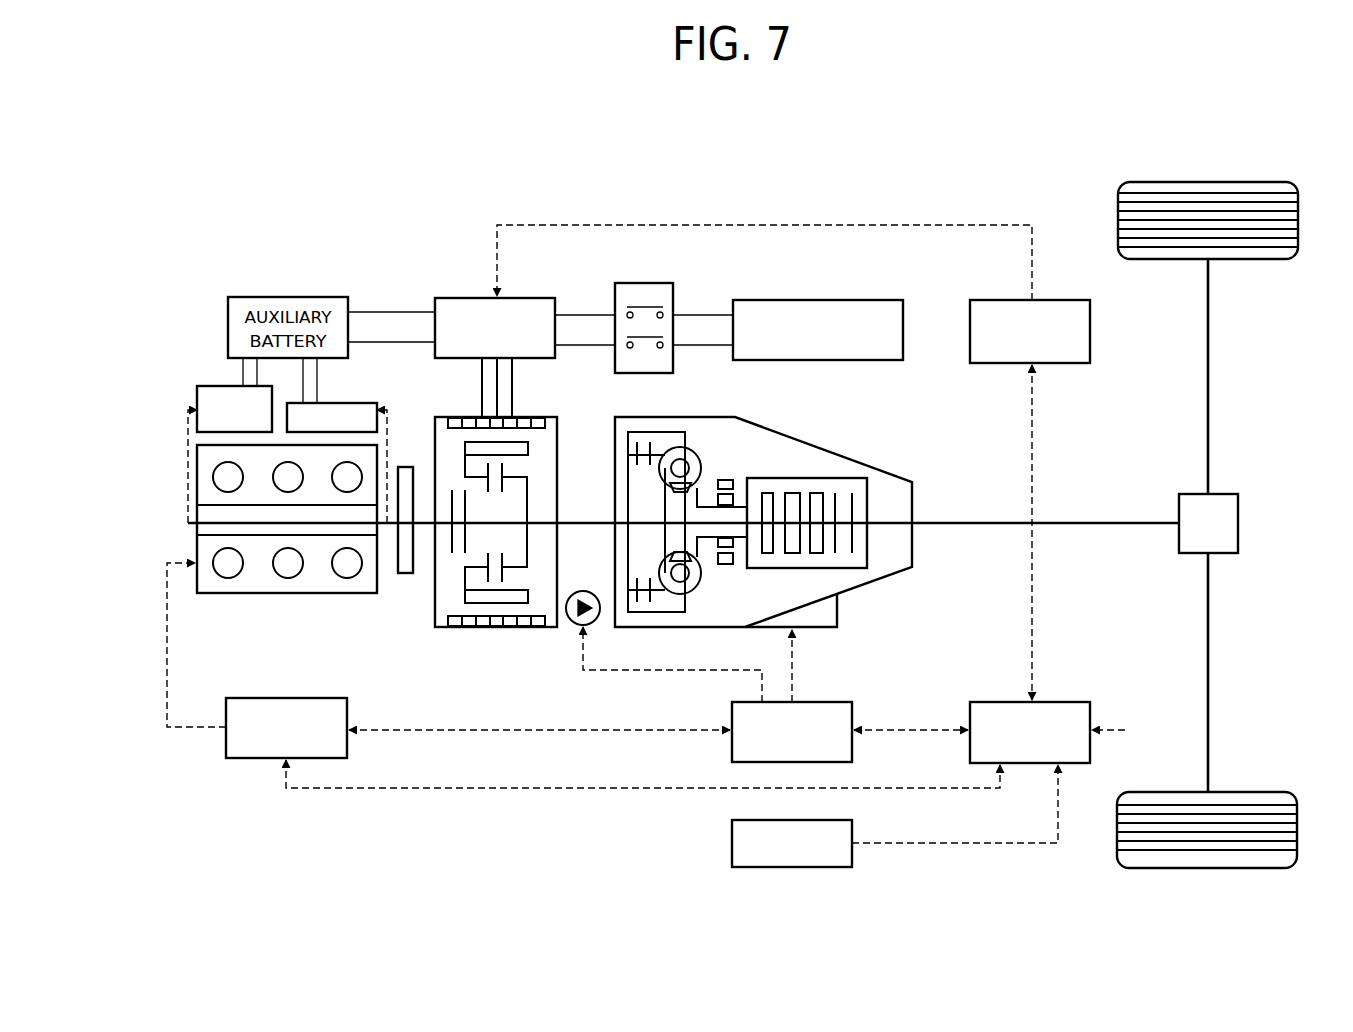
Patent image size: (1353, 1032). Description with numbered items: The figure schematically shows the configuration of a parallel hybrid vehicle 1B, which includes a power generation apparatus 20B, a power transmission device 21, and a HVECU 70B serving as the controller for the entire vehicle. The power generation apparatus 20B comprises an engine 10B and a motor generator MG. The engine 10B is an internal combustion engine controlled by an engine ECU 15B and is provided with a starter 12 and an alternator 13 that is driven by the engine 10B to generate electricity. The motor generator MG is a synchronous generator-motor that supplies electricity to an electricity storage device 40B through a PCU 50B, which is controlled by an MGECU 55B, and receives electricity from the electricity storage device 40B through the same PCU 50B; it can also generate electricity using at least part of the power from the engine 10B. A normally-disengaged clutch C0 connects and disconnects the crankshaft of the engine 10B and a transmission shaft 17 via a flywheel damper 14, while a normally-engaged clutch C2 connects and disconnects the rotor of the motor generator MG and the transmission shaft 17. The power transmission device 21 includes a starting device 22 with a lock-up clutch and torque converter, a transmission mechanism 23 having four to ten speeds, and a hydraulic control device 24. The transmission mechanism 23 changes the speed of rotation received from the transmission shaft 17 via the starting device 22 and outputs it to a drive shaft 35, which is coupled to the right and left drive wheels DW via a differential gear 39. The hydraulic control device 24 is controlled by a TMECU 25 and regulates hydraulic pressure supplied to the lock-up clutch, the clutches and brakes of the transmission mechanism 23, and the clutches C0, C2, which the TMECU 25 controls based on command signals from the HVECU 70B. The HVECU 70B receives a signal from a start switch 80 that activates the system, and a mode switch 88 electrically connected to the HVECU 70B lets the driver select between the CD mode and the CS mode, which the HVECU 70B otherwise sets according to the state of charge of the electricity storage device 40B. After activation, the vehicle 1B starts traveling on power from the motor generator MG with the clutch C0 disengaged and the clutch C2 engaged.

The hybrid vehicle 1B is at (290, 192).
The engine 10B is at (280, 593).
The starter 12 is at (365, 398).
The alternator 13 is at (210, 384).
The flywheel damper 14 is at (412, 460).
The engine ECU 15B is at (237, 758).
The transmission shaft 17 is at (576, 520).
The power generation apparatus 20B is at (418, 545).
The motor generator MG is at (473, 523).
The clutch C0 is at (447, 540).
The clutch C2 is at (513, 468).
The power transmission device 21 is at (776, 538).
The starting device 22 is at (714, 457).
The transmission mechanism 23 is at (845, 478).
The hydraulic control device 24 is at (830, 606).
The TMECU 25 is at (852, 704).
The drive shaft 35 is at (1074, 527).
The differential gear 39 is at (1240, 525).
The drive wheels DW is at (1198, 182).
The electricity storage device 40B is at (810, 300).
The PCU 50B is at (528, 298).
The MGECU 55B is at (1000, 300).
The HVECU 70B is at (1062, 702).
The start switch 80 is at (1126, 730).
The mode switch 88 is at (730, 843).